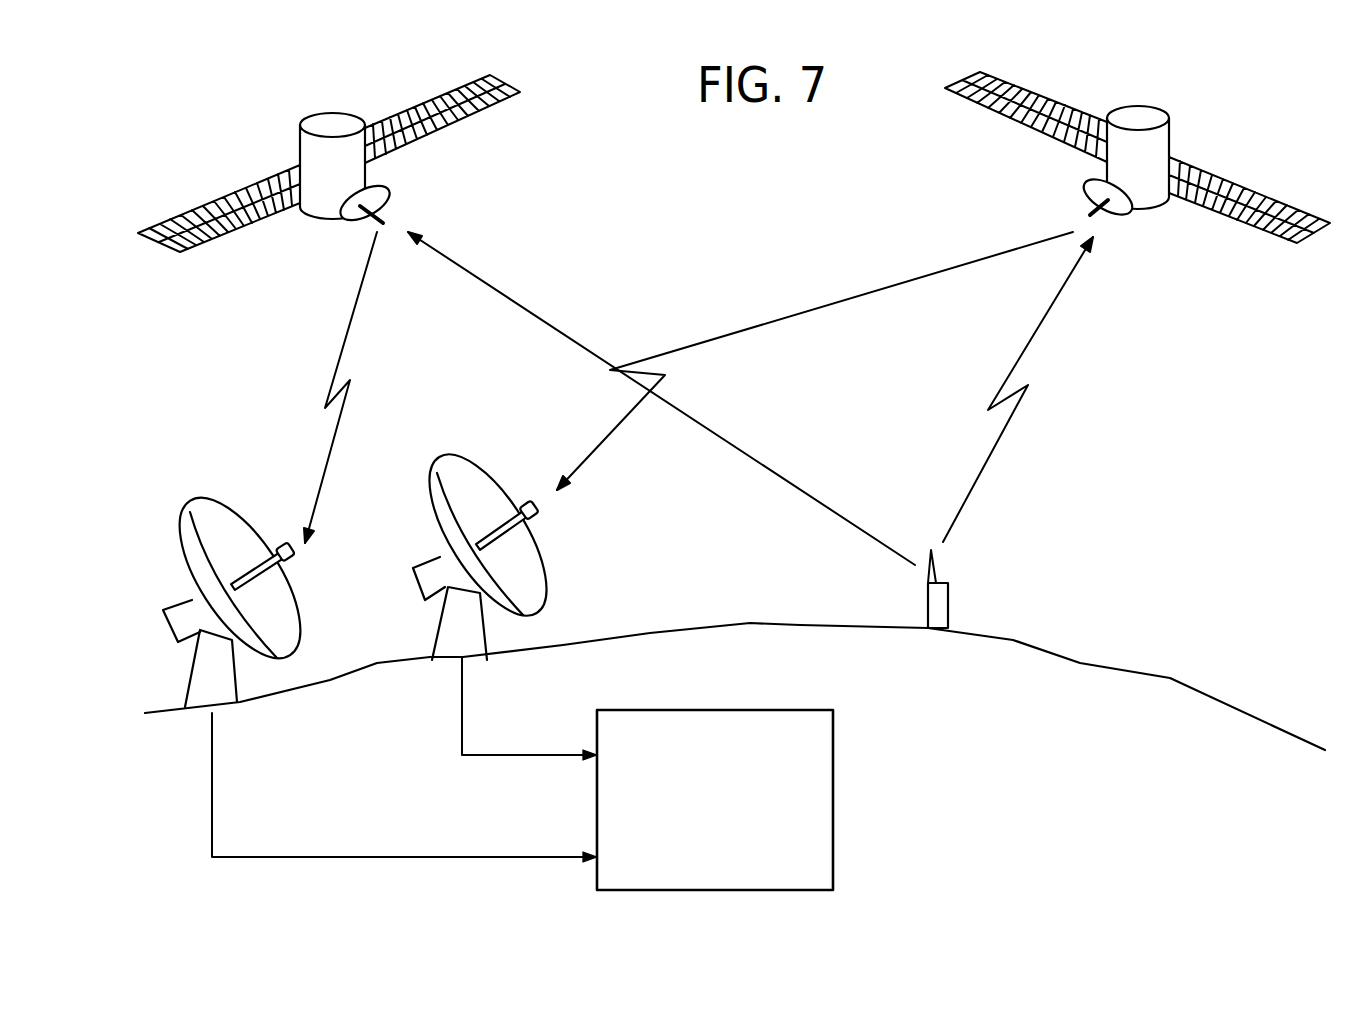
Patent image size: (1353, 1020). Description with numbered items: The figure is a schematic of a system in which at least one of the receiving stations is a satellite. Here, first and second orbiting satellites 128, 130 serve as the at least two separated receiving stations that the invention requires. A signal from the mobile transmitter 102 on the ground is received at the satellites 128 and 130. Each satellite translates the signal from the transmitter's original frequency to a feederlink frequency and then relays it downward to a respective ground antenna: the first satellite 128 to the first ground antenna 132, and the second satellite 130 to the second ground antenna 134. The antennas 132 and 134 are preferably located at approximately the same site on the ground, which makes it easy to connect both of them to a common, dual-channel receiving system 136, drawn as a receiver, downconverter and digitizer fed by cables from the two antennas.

The first orbiting satellite 128 is at (300, 150).
The second orbiting satellite 130 is at (1170, 138).
The first ground antenna 132 is at (188, 555).
The second ground antenna 134 is at (465, 472).
The mobile transmitter 102 is at (948, 598).
The dual-channel receiving system 136 is at (835, 720).